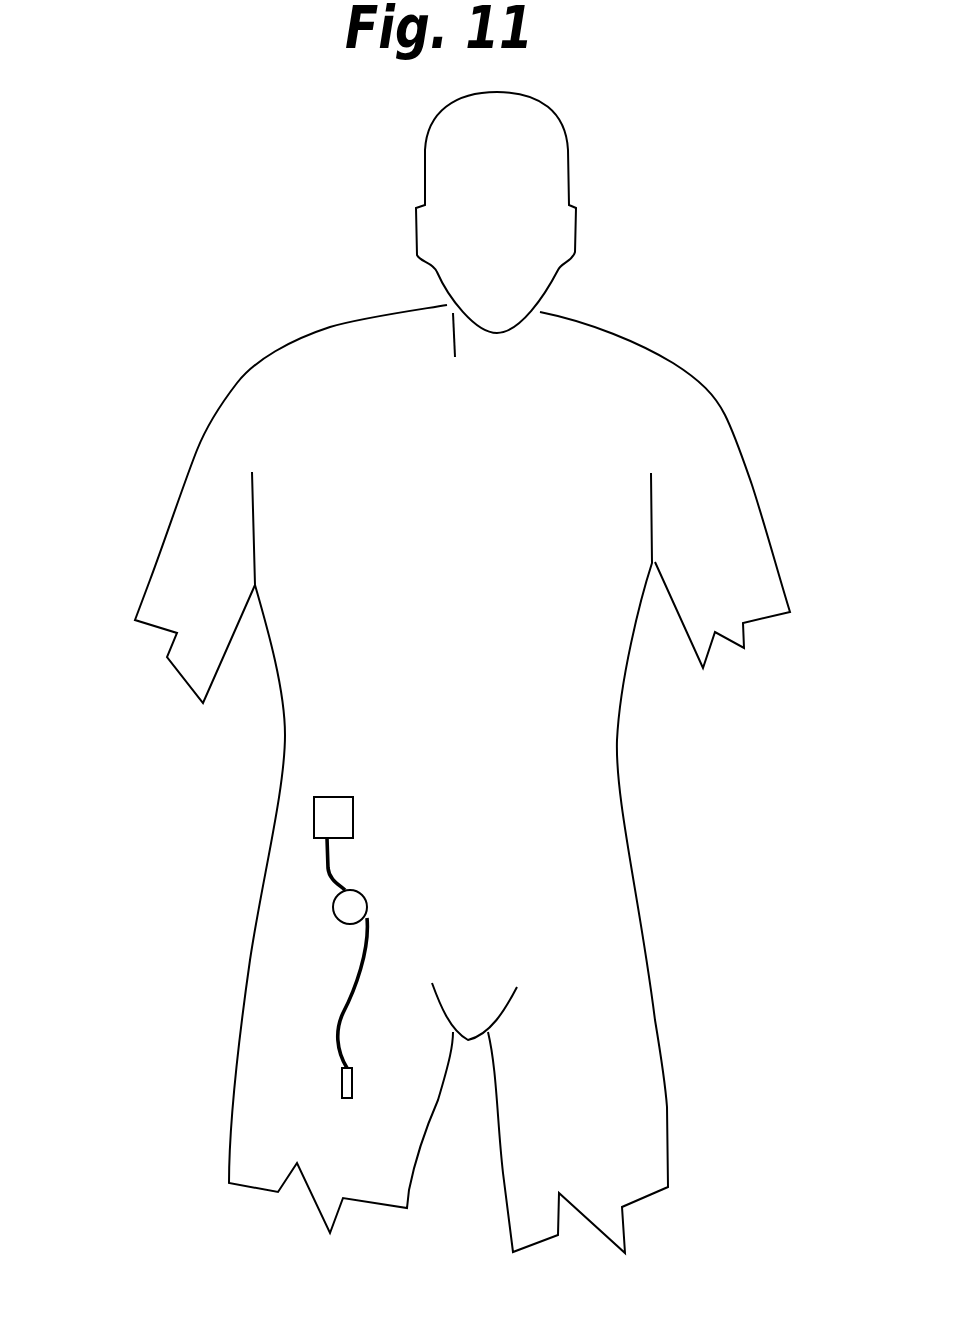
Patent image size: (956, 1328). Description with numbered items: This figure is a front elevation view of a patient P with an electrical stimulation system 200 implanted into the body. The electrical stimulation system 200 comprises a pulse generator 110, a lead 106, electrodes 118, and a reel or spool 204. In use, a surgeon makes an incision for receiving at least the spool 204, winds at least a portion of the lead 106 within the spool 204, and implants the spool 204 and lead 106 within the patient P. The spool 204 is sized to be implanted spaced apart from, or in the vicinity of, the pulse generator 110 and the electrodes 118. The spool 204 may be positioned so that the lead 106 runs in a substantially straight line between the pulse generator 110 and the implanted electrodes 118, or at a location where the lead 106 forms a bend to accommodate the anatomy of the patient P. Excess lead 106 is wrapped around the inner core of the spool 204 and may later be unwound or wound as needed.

The patient P is at (601, 318).
The electrical stimulation system 200 is at (194, 778).
The pulse generator 110 is at (314, 817).
The lead 106 is at (324, 870).
The spool 204 is at (334, 927).
The electrodes 118 is at (342, 1083).